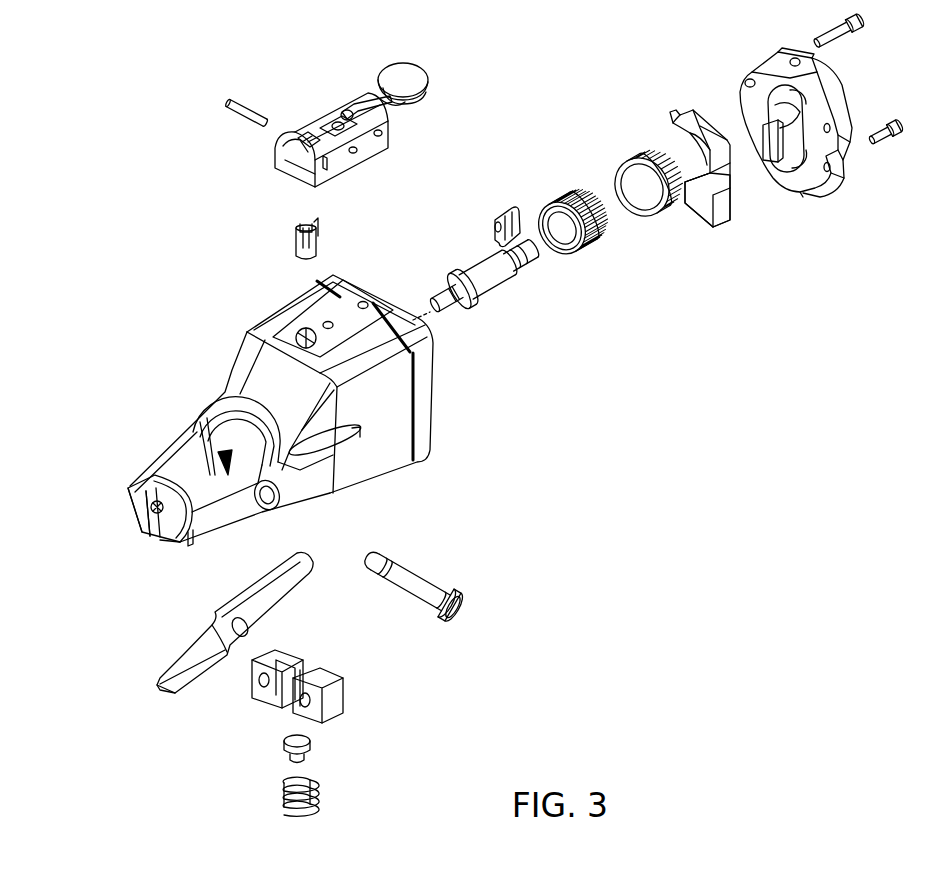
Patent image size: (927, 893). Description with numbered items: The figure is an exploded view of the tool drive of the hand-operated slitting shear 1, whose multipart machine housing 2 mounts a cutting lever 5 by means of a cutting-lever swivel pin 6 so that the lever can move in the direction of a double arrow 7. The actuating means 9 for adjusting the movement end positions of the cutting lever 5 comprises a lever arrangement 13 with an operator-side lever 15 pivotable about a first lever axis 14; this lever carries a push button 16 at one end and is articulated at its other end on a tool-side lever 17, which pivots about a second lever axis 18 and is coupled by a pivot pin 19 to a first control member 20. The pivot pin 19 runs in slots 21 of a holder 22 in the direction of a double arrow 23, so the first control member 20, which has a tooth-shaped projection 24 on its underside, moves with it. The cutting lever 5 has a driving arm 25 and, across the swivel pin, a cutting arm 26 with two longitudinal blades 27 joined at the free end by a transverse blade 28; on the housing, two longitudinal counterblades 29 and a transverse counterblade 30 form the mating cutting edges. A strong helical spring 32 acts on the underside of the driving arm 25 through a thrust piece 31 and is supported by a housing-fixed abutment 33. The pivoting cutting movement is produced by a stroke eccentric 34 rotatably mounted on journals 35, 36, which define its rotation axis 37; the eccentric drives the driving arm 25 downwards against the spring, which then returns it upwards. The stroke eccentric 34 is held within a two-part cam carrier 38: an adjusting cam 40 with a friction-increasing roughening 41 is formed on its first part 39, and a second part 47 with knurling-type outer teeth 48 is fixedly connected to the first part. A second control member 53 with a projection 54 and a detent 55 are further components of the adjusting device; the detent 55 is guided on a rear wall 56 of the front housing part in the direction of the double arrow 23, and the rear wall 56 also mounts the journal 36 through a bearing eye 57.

The hand-operated slitting shear 1 is at (168, 352).
The machine housing 2 is at (440, 462).
The cutting lever 5 is at (221, 646).
The cutting-lever swivel pin 6 is at (460, 610).
The double arrow 7 is at (74, 663).
The actuating means 9 is at (340, 88).
The lever arrangement 13 is at (333, 124).
The first lever axis 14 is at (383, 136).
The operator-side lever 15 is at (372, 99).
The push button 16 is at (410, 72).
The tool-side lever 17 is at (303, 138).
The second lever axis 18 is at (358, 153).
The pivot pin 19 is at (235, 118).
The first control member 20 is at (268, 249).
The slots 21 is at (330, 168).
The holder 22 is at (325, 107).
The double arrow 23 is at (175, 152).
The tooth-shaped projection 24 is at (300, 258).
The driving arm 25 is at (285, 590).
The cutting arm 26 is at (200, 632).
The longitudinal blades 27 is at (168, 668).
The transverse blade 28 is at (155, 688).
The longitudinal counterblades 29 is at (135, 492).
The transverse counterblade 30 is at (143, 522).
The thrust piece 31 is at (312, 752).
The helical spring 32 is at (312, 800).
The abutment 33 is at (338, 700).
The stroke eccentric 34 is at (517, 289).
The journal 35 is at (489, 306).
The journal 36 is at (575, 283).
The rotation axis 37 is at (425, 322).
The cam carrier 38 is at (612, 190).
The first part of the cam carrier 39 is at (573, 176).
The adjusting cam 40 is at (557, 188).
The roughening 41 is at (586, 199).
The second part of the cam carrier 47 is at (720, 173).
The knurling-type outer teeth 48 is at (690, 225).
The second control member 53 is at (474, 204).
The projection 54 is at (492, 230).
The detent 55 is at (725, 183).
The rear wall 56 is at (810, 118).
The bearing eye 57 is at (748, 72).